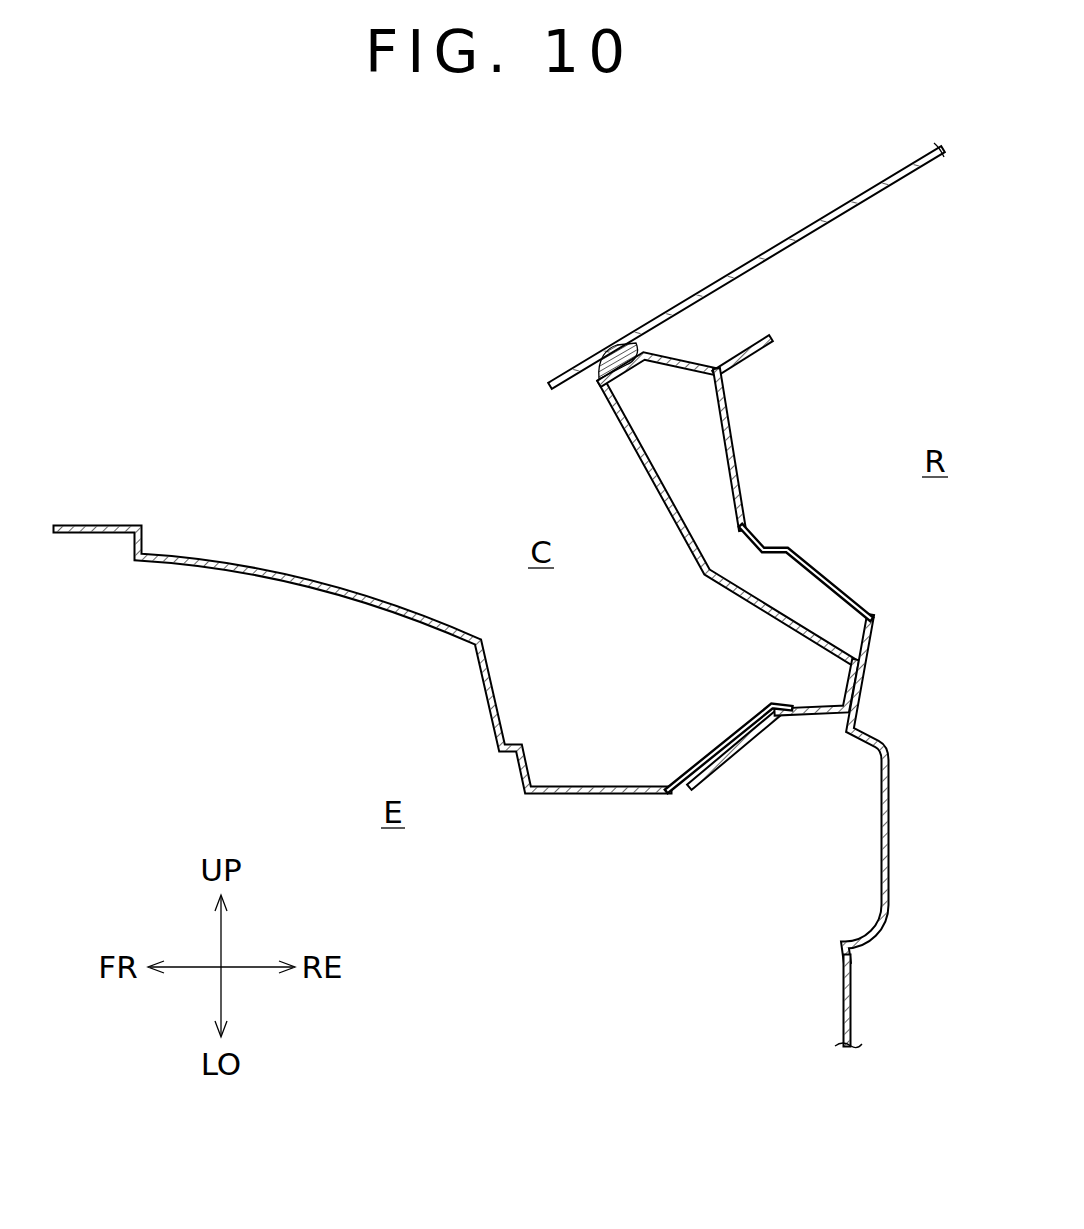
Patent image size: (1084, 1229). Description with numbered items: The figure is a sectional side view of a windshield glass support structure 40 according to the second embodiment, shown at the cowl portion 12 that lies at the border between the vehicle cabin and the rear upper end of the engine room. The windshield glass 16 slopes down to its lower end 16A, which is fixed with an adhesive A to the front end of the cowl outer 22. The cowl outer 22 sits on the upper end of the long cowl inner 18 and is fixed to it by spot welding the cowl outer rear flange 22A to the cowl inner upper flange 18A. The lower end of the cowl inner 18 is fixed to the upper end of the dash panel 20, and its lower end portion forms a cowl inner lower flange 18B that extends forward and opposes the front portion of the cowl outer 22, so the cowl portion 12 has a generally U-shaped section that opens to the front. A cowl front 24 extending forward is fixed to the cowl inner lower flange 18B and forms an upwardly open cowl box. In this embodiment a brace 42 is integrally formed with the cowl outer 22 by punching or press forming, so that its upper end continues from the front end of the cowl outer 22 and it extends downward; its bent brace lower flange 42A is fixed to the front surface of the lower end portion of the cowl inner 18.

The cowl portion 12 is at (771, 669).
The windshield glass 16 is at (777, 243).
The lower end of the windshield glass 16A is at (563, 377).
The cowl inner 18 is at (745, 493).
The cowl inner upper flange 18A is at (753, 362).
The cowl inner lower flange 18B is at (738, 752).
The dash panel 20 is at (852, 1005).
The cowl outer 22 is at (683, 360).
The cowl outer rear flange 22A is at (760, 338).
The cowl front 24 is at (495, 688).
The windshield glass support structure 40 is at (472, 380).
The brace 42 is at (642, 462).
The brace lower flange 42A is at (847, 682).
The adhesive A is at (640, 345).